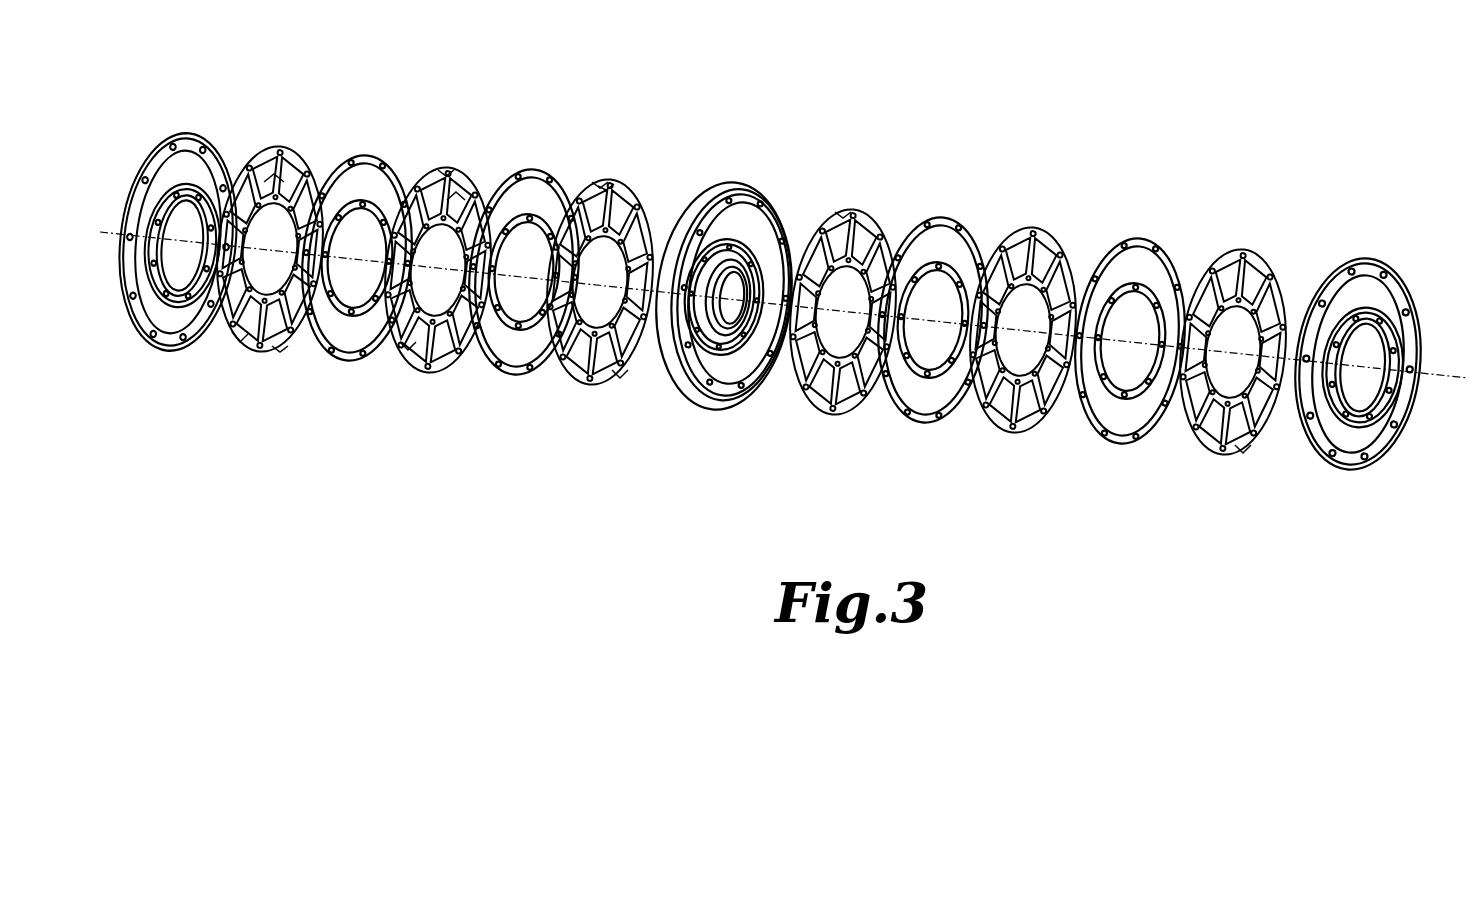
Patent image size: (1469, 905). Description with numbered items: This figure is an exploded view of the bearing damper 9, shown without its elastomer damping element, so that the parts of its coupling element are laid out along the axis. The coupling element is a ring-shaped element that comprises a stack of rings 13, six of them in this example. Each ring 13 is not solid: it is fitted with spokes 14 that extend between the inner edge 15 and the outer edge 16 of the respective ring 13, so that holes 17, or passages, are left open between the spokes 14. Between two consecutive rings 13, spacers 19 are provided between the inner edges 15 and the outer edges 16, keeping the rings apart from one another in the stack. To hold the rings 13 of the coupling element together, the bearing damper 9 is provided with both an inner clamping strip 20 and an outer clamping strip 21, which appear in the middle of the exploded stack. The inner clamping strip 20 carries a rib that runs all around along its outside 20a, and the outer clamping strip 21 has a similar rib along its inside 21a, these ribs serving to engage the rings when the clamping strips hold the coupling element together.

The bearing damper element 9 is at (535, 70).
The ring 13 is at (262, 350).
The spoke 14 is at (232, 336).
The inner edge 15 is at (280, 350).
The outer edge 16 is at (446, 176).
The hole 17 is at (276, 172).
The spacer 19 is at (352, 357).
The inner clamping strip 20 is at (738, 360).
The outside of the inner clamping strip 20a is at (720, 365).
The outer clamping strip 21 is at (705, 188).
The inside of the outer clamping strip 21a is at (757, 195).